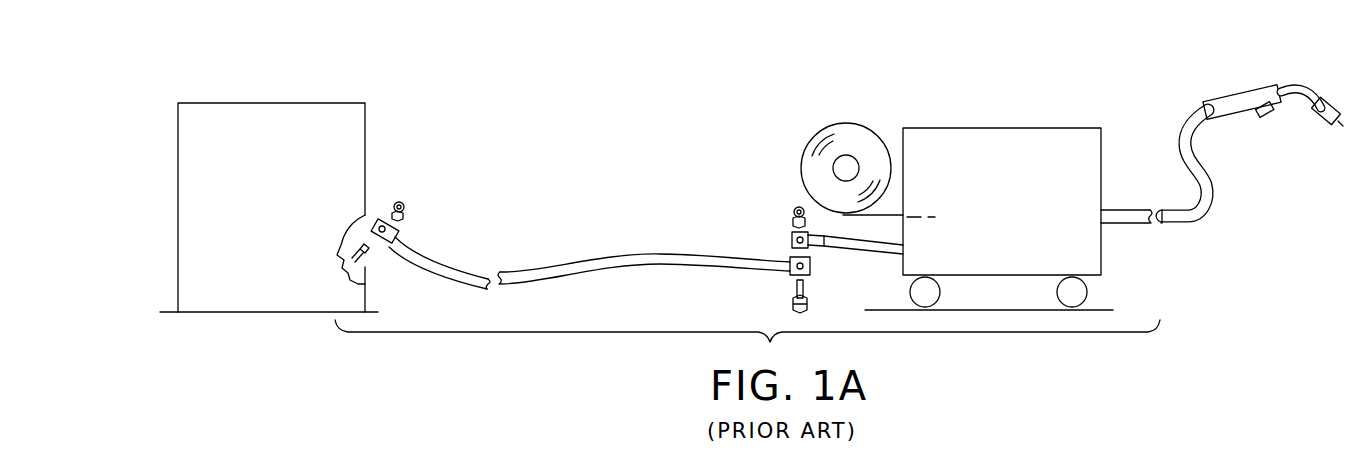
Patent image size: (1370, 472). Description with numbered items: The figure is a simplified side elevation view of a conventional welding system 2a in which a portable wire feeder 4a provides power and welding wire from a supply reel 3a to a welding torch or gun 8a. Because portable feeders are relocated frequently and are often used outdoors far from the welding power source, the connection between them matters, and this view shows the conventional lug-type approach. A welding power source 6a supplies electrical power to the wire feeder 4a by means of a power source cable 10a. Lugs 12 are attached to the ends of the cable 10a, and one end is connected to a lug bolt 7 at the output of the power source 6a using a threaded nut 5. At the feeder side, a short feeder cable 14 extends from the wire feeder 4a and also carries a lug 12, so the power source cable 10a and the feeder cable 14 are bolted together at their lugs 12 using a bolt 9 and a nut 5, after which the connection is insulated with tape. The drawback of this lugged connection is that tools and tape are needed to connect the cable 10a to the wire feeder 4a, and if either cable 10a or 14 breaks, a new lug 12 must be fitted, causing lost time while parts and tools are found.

The welding system 2a is at (1062, 60).
The supply reel 3a is at (852, 122).
The portable wire feeder 4a is at (1040, 126).
The threaded nut 5 is at (398, 197).
The welding power source 6a is at (332, 102).
The lug bolt 7 is at (368, 247).
The welding torch 8a is at (1260, 72).
The bolt 9 is at (806, 287).
The power source cable 10a is at (551, 268).
The lug 12 is at (396, 233).
The feeder cable 14 is at (858, 250).